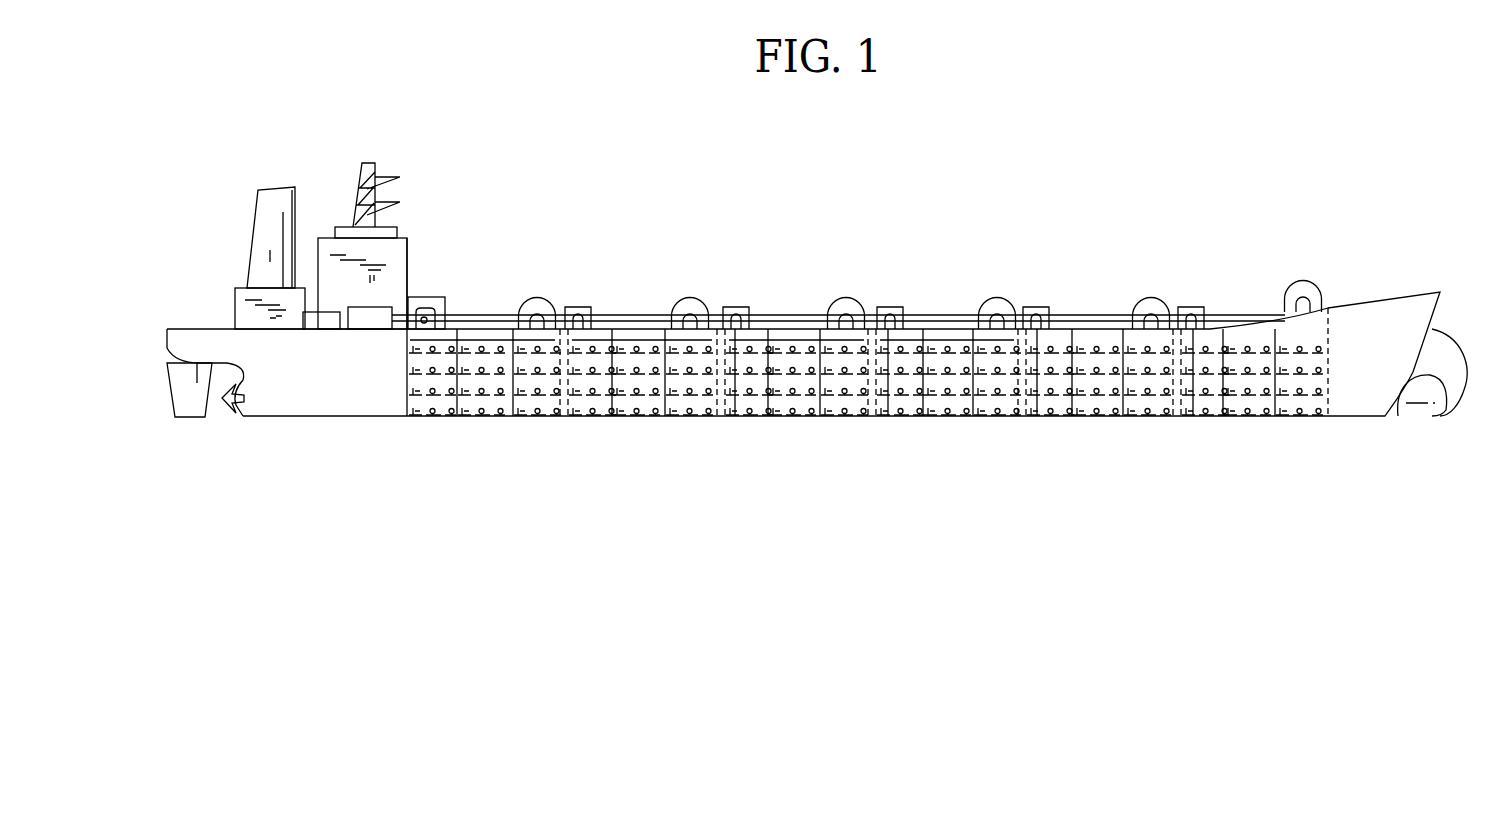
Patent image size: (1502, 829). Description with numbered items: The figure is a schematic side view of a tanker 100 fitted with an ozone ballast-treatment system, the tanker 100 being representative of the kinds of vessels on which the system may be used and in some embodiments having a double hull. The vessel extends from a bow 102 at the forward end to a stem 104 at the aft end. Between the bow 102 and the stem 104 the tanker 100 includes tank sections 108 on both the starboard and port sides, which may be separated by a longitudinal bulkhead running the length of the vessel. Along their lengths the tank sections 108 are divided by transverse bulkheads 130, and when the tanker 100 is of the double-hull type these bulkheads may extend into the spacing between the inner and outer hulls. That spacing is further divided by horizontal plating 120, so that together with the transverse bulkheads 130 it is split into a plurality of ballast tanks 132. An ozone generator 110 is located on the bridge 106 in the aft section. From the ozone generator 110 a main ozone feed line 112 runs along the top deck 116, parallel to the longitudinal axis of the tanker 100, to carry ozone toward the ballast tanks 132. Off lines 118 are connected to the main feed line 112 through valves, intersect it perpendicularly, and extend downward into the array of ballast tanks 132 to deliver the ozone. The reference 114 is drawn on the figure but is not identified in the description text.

The tanker 100 is at (1010, 255).
The bow 102 is at (1458, 373).
The stem 104 is at (162, 330).
The bridge 106 is at (228, 329).
The tank sections 108 is at (398, 373).
The ozone generator 110 is at (372, 308).
The main ozone feed line 112 is at (612, 316).
The second cargo hold 114 is at (780, 331).
The top deck 116 is at (938, 333).
The off lines 118 is at (575, 329).
The horizontal plating 120 is at (477, 354).
The transverse bulkheads 130 is at (566, 412).
The ballast tanks 132 is at (690, 338).